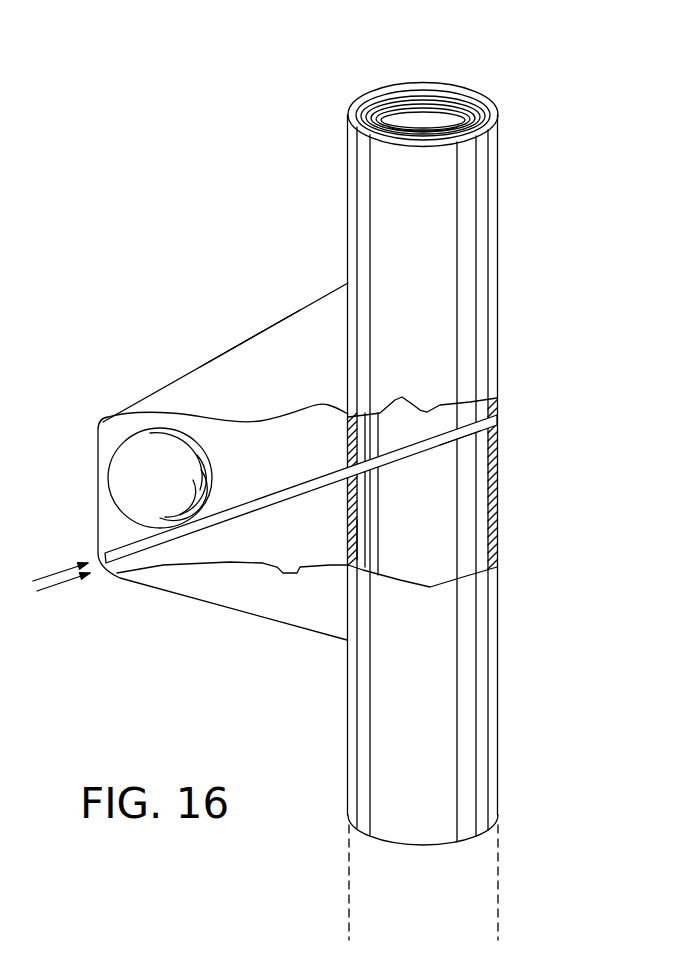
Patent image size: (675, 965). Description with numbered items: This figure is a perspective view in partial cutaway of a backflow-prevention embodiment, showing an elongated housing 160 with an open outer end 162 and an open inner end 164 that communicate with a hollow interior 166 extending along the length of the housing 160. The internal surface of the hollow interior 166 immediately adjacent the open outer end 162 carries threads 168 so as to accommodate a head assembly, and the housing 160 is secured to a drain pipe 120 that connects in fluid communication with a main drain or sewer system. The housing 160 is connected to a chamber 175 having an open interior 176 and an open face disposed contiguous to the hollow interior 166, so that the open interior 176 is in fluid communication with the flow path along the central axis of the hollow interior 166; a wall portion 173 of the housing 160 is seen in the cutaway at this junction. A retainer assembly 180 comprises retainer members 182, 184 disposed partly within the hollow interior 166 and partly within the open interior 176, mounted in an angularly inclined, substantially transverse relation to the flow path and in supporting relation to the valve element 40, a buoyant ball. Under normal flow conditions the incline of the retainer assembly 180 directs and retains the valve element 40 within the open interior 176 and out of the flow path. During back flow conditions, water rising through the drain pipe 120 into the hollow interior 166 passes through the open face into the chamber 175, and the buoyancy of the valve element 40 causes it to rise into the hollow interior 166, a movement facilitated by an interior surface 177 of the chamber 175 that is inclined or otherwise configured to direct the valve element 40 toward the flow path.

The elongated housing 160 is at (541, 362).
The open outer end 162 is at (428, 85).
The internal threads 168 is at (465, 107).
The open inner end 164 is at (480, 837).
The hollow interior 166 is at (445, 512).
The drain pipe 120 is at (348, 903).
The wall opening 173 is at (355, 535).
The chamber 175 is at (233, 343).
The open interior 176 is at (290, 549).
The interior surface of chamber 177 is at (267, 328).
The retainer assembly 180 is at (468, 453).
The valve element 40 is at (145, 452).
The retainer member 182 is at (43, 588).
The retainer member 184 is at (63, 582).